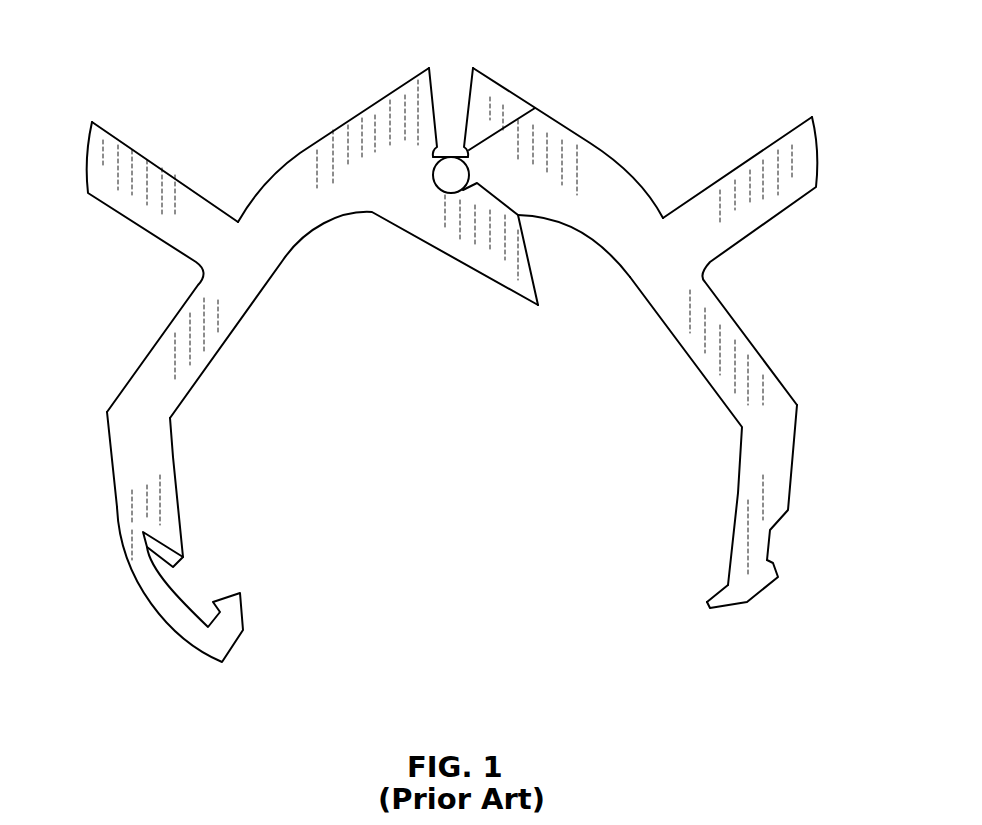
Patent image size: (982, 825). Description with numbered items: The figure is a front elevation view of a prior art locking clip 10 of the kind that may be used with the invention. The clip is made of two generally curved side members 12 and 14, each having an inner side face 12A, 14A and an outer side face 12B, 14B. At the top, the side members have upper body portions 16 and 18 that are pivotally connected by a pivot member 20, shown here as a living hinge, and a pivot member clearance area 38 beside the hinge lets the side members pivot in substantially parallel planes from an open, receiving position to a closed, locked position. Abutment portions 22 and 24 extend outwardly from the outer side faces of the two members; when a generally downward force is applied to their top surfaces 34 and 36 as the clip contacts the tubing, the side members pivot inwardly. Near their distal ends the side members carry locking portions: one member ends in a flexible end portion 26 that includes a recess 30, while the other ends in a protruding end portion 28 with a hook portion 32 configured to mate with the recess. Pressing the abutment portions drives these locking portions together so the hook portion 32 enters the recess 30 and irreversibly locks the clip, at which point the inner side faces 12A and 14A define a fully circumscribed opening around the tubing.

The locking clip 10 is at (716, 62).
The side member 12 is at (125, 475).
The inner side face 12A is at (191, 396).
The outer side face 12B is at (131, 360).
The side member 14 is at (780, 455).
The inner side face 14A is at (702, 378).
The outer side face 14B is at (784, 365).
The upper body portion 16 is at (285, 152).
The upper body portion 18 is at (586, 100).
The pivot member 20 is at (450, 152).
The abutment portion 22 is at (92, 163).
The abutment portion 24 is at (808, 155).
The flexible end portion 26 is at (179, 661).
The protruding end portion 28 is at (780, 597).
The recess 30 is at (190, 577).
The hook portion 32 is at (725, 585).
The top surface 34 is at (125, 134).
The top surface 36 is at (774, 130).
The pivot member clearance area 38 is at (580, 208).